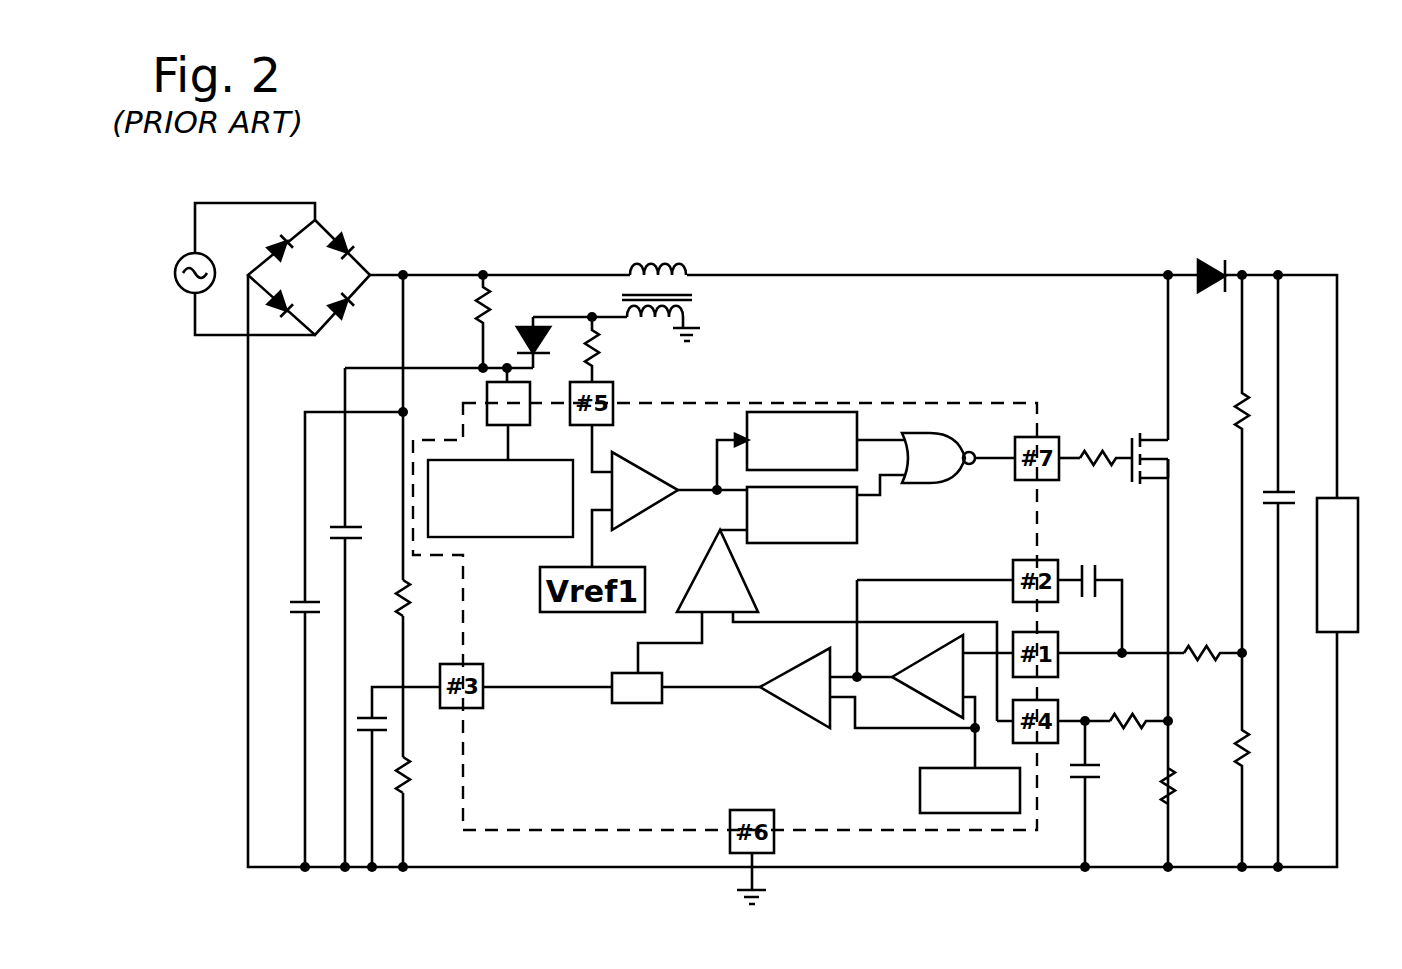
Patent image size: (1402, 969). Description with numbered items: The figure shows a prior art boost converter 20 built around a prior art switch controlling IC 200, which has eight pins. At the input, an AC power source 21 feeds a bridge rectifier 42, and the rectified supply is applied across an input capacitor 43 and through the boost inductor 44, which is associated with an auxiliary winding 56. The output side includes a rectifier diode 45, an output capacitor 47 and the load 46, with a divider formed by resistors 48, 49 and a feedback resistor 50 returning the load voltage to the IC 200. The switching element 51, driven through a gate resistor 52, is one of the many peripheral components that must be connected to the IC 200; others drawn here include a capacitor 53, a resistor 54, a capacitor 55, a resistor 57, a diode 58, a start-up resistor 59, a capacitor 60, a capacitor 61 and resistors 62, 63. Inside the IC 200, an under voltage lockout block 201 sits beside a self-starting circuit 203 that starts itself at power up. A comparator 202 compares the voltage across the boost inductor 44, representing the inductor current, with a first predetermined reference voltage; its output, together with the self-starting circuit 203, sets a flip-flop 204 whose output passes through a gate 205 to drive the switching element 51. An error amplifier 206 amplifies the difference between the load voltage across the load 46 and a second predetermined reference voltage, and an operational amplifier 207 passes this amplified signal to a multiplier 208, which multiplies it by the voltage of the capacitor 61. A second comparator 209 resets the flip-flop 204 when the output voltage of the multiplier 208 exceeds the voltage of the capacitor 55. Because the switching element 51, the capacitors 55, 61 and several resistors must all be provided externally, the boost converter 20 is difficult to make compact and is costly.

The boost converter 20 is at (983, 198).
The AC power source 21 is at (177, 262).
The bridge rectifier 42 is at (318, 220).
The input capacitor 43 is at (300, 615).
The boost inductor 44 is at (650, 268).
The output rectifier diode 45 is at (1205, 262).
The load 46 is at (1356, 498).
The output capacitor 47 is at (1287, 490).
The voltage divider resistor 48 is at (1238, 393).
The voltage divider resistor 49 is at (1238, 750).
The feedback resistor 50 is at (1200, 650).
The switching element 51 is at (1130, 440).
The gate resistor 52 is at (1080, 470).
The compensation capacitor 53 is at (1093, 567).
The resistor 54 is at (1130, 715).
The capacitor 55 is at (1090, 780).
The transformer auxiliary winding 56 is at (690, 318).
The resistor 57 is at (598, 340).
The diode 58 is at (533, 330).
The start-up resistor 59 is at (483, 305).
The capacitor 60 is at (352, 527).
The capacitor 61 is at (360, 718).
The resistor 62 is at (410, 600).
The resistor 63 is at (410, 770).
The switch controlling IC 200 is at (840, 403).
The under voltage lockout circuit 201 is at (510, 540).
The comparator 202 is at (633, 462).
The self-starting circuit 203 is at (772, 410).
The flip-flop 204 is at (857, 515).
The NOR gate 205 is at (920, 437).
The error amplifier 206 is at (940, 655).
The operational amplifier 207 is at (815, 658).
The multiplier 208 is at (630, 703).
The comparator 209 is at (745, 588).